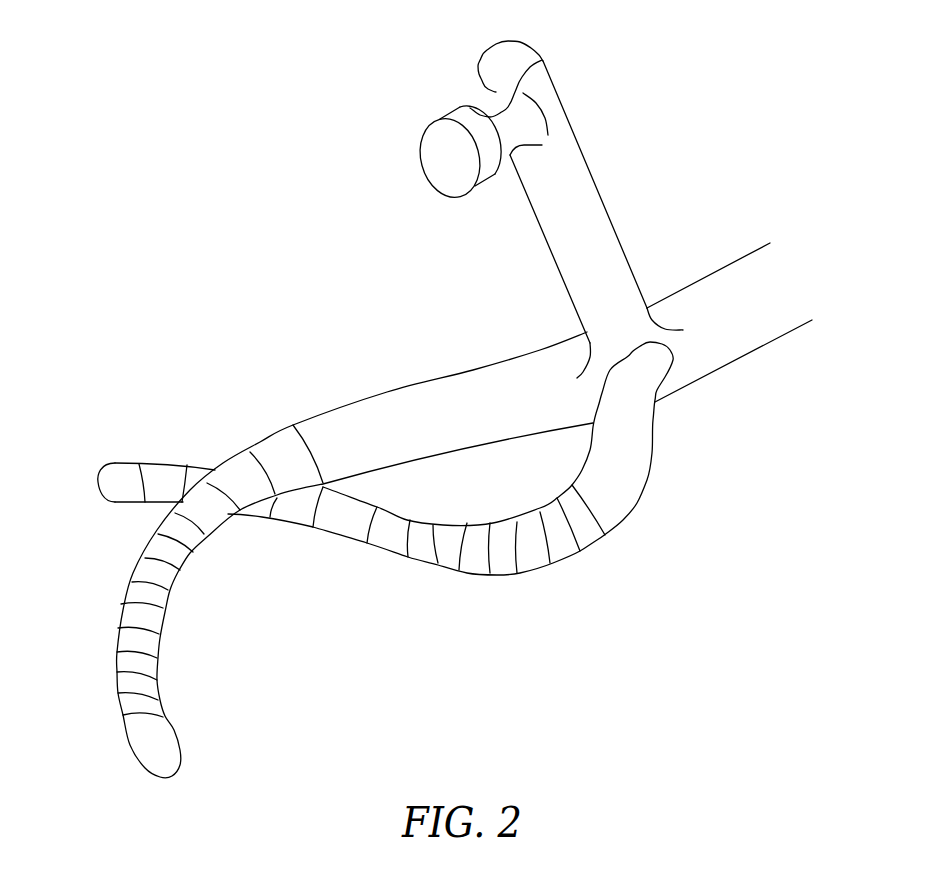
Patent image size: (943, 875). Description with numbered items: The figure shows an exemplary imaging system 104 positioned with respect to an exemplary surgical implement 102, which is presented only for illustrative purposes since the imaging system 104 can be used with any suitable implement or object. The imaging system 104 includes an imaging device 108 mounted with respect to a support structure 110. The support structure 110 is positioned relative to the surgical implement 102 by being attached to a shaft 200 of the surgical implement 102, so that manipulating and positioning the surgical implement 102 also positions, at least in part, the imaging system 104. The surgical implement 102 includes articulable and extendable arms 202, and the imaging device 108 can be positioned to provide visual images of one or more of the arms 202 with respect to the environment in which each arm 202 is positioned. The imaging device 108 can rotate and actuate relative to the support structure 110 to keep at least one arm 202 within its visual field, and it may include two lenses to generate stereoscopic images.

The surgical implement 102 is at (615, 502).
The imaging system 104 is at (513, 110).
The imaging device 108 is at (455, 158).
The support structure 110 is at (568, 208).
The shaft 200 is at (705, 343).
The articulable and extendable arms 202 is at (153, 600).